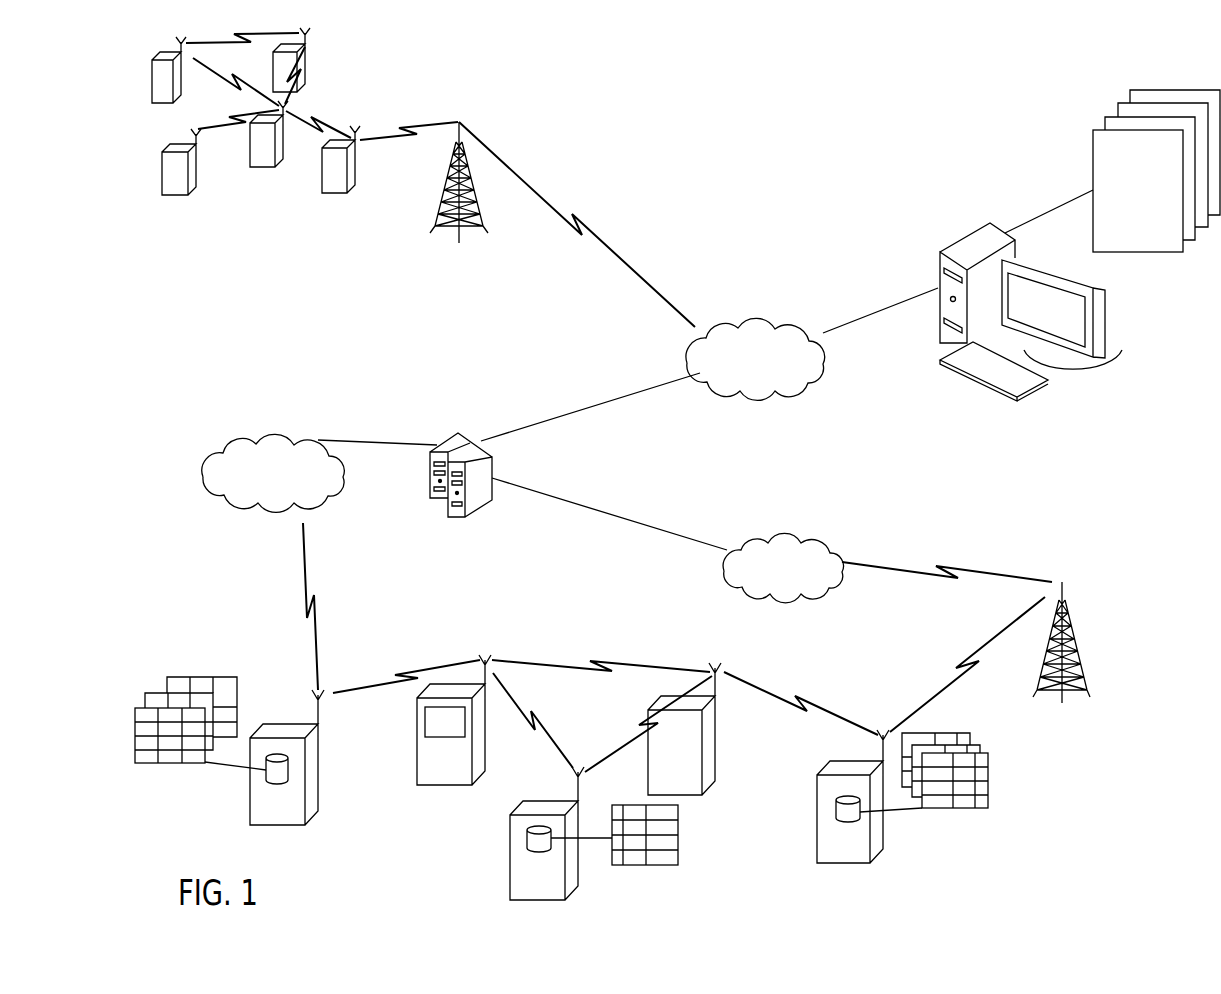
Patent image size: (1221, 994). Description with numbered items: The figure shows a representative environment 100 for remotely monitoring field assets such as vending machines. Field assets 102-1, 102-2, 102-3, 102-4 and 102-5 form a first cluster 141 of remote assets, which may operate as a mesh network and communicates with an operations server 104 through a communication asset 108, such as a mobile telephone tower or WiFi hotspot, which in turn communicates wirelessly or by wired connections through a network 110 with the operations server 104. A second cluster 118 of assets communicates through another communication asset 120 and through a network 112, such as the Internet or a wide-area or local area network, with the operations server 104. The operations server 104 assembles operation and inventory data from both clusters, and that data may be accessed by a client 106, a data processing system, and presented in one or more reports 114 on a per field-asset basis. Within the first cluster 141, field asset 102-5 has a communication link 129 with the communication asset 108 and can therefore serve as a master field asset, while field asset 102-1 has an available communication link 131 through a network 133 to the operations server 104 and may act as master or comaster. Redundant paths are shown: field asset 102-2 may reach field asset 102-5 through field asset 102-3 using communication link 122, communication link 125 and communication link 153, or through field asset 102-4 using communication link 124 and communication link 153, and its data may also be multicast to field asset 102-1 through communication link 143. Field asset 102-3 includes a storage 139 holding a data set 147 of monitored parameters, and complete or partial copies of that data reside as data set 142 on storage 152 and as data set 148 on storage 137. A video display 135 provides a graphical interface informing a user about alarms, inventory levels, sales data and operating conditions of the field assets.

The environment 100 is at (753, 165).
The field asset 102-1 is at (260, 824).
The field asset 102-2 is at (425, 784).
The field asset 102-3 is at (517, 897).
The field asset 102-4 is at (657, 789).
The field asset 102-5 is at (826, 861).
The operations server 104 is at (473, 517).
The client 106 is at (1075, 390).
The communication asset 108 is at (1078, 635).
The network 110 is at (769, 578).
The network 112 is at (741, 373).
The reports 114 is at (1122, 164).
The second cluster 118 is at (260, 199).
The communication asset 120 is at (485, 226).
The communication link 122 is at (548, 718).
The communication link 124 is at (610, 662).
The communication link 125 is at (687, 708).
The communication link 129 is at (960, 664).
The communication link 131 is at (300, 596).
The network 133 is at (258, 487).
The video display 135 is at (423, 723).
The storage 137 is at (289, 773).
The storage 139 is at (527, 840).
The first cluster 141 is at (563, 600).
The data set 142 is at (970, 733).
The communication link 143 is at (400, 673).
The data set 147 is at (678, 812).
The data set 148 is at (237, 683).
The storage 152 is at (836, 808).
The communication link 153 is at (795, 696).